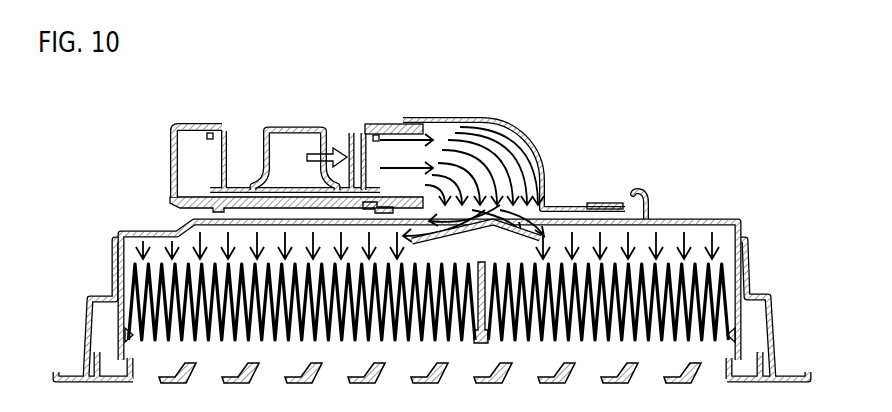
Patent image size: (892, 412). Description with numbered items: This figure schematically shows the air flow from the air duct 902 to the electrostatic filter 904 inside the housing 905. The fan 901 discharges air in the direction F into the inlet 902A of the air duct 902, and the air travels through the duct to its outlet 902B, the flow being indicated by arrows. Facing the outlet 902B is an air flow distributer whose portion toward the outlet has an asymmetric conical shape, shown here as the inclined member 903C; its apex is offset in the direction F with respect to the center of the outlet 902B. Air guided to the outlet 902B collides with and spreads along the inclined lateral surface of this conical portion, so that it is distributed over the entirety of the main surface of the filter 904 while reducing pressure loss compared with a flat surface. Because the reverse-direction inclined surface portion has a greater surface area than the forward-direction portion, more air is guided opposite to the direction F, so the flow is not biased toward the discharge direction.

The fan 901 is at (274, 110).
The air duct 902 is at (487, 116).
The inlet of the air duct 902A is at (400, 134).
The outlet of the air duct 902B is at (515, 222).
The deflector plate 903C is at (545, 236).
The filter 904 is at (622, 298).
The housing 905 is at (725, 232).